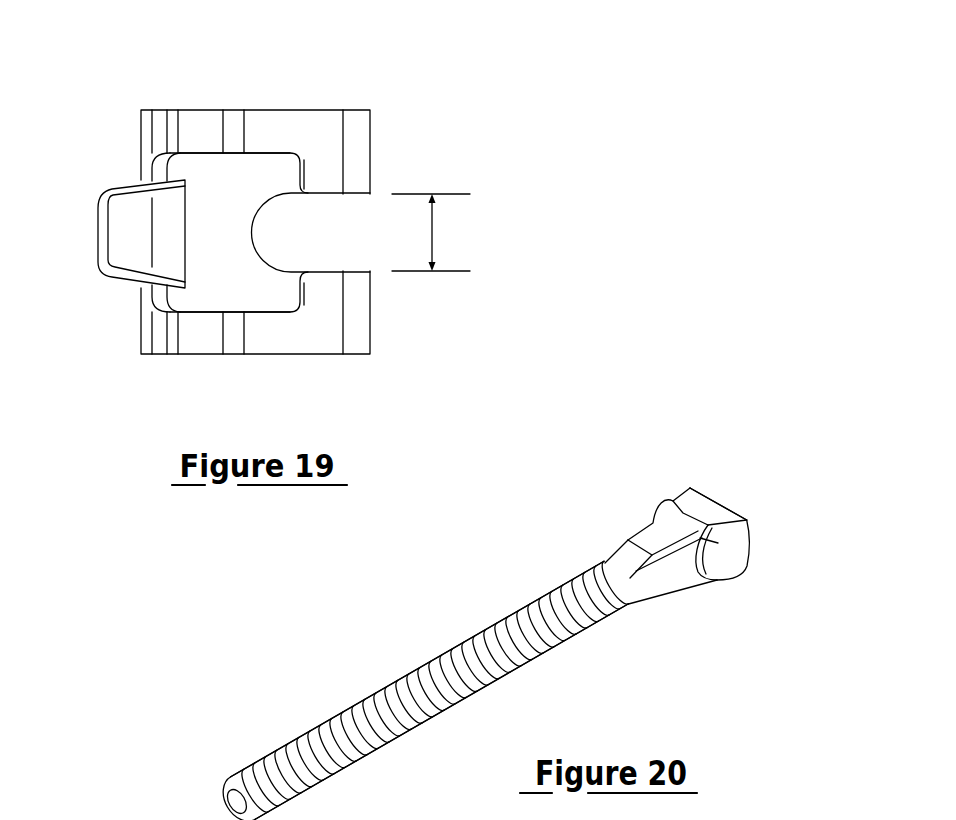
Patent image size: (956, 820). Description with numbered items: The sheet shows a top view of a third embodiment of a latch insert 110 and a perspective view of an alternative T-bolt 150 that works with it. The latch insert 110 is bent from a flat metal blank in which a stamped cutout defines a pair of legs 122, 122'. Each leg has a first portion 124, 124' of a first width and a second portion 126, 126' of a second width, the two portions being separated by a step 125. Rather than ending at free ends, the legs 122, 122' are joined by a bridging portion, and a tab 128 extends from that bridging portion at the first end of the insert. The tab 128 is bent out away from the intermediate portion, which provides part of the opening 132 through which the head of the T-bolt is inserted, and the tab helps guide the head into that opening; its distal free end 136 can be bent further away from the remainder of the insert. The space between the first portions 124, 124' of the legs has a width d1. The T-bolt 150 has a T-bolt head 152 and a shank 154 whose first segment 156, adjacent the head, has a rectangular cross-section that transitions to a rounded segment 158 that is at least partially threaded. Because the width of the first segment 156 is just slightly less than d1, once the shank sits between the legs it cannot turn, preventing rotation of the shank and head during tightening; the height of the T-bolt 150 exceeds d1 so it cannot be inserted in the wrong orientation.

In FIG. 19, the latch insert 110 is at (446, 134).
In FIG. 19, the leg 122 is at (204, 377).
In FIG. 19, the leg 122' is at (144, 105).
In FIG. 19, the first portion 124 is at (368, 334).
In FIG. 19, the first portion 124' is at (375, 128).
In FIG. 19, the step 125 is at (290, 290).
In FIG. 19, the second portion 126 is at (178, 356).
In FIG. 19, the second portion 126' is at (230, 89).
In FIG. 19, the tab 128 is at (130, 183).
In FIG. 19, the opening 132 is at (232, 181).
In FIG. 19, the distal free end 136 is at (97, 243).
In FIG. 19, the width of the opening d1 is at (437, 232).
In FIG. 20, the T-bolt 150 is at (352, 627).
In FIG. 20, the T-bolt head 152 is at (728, 488).
In FIG. 20, the shank 154 is at (284, 718).
In FIG. 20, the first segment 156 is at (662, 578).
In FIG. 20, the rounded segment 158 is at (343, 767).